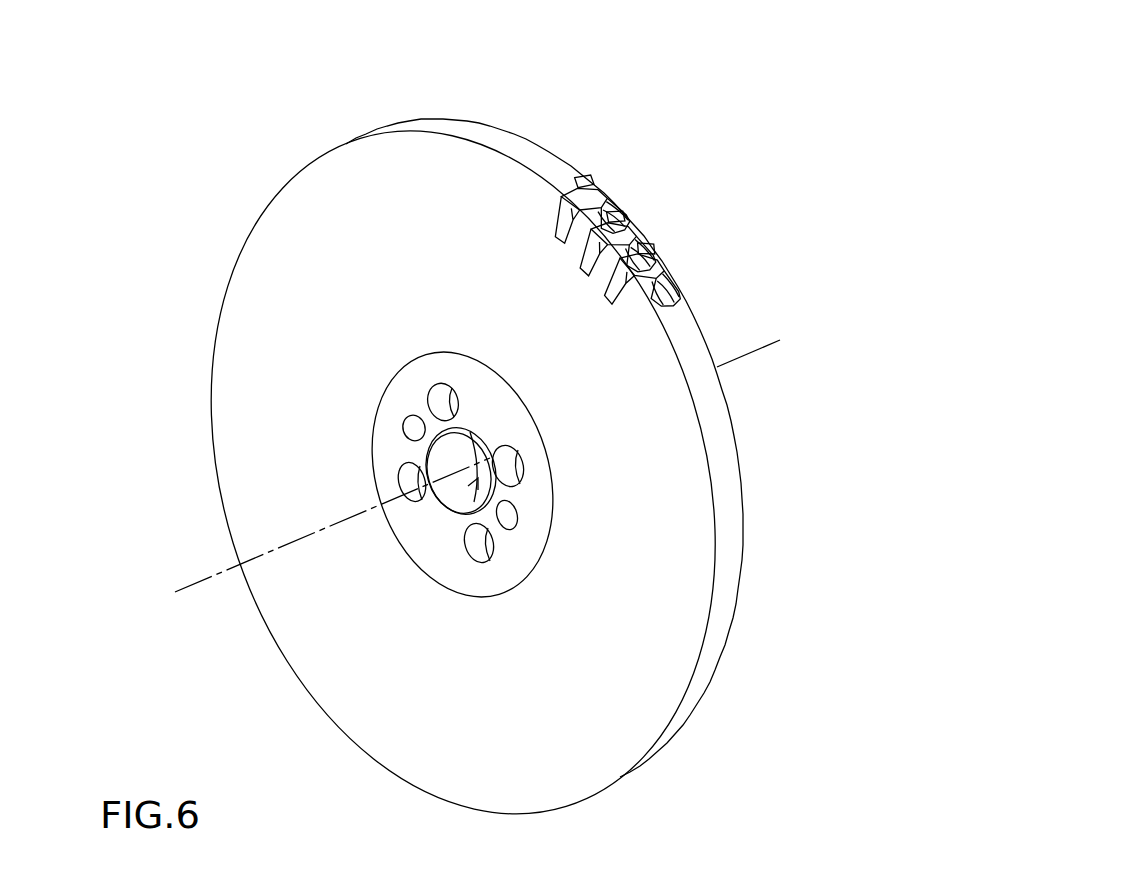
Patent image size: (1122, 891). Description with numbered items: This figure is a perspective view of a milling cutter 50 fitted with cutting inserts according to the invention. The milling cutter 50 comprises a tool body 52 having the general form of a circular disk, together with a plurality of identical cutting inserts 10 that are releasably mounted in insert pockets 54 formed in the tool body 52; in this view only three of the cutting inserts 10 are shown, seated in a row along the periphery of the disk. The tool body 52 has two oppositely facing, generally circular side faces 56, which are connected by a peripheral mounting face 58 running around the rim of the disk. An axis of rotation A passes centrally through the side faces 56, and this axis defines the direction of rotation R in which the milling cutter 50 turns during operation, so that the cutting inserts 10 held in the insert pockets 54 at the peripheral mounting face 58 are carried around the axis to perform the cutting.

The milling cutter 50 is at (463, 450).
The tool body 52 is at (463, 473).
The insert pockets 54 is at (678, 282).
The side faces 56 is at (337, 693).
The peripheral mounting face 58 is at (690, 332).
The cutting inserts 10 is at (667, 247).
The direction of rotation R is at (650, 133).
The axis of rotation A is at (207, 568).